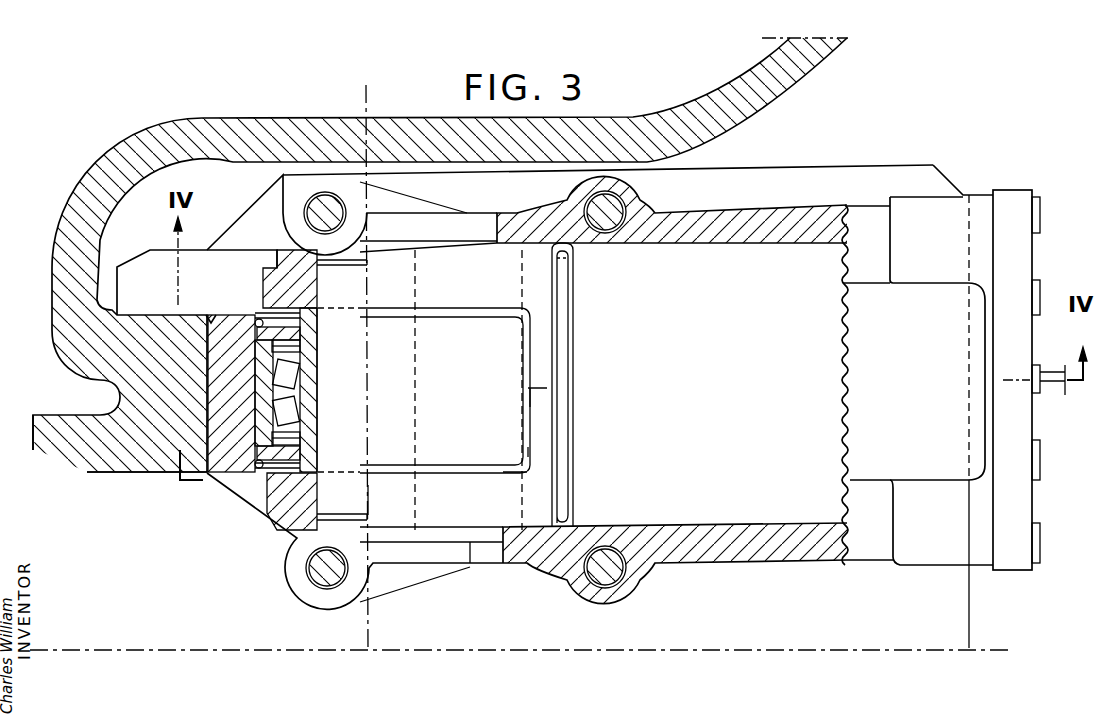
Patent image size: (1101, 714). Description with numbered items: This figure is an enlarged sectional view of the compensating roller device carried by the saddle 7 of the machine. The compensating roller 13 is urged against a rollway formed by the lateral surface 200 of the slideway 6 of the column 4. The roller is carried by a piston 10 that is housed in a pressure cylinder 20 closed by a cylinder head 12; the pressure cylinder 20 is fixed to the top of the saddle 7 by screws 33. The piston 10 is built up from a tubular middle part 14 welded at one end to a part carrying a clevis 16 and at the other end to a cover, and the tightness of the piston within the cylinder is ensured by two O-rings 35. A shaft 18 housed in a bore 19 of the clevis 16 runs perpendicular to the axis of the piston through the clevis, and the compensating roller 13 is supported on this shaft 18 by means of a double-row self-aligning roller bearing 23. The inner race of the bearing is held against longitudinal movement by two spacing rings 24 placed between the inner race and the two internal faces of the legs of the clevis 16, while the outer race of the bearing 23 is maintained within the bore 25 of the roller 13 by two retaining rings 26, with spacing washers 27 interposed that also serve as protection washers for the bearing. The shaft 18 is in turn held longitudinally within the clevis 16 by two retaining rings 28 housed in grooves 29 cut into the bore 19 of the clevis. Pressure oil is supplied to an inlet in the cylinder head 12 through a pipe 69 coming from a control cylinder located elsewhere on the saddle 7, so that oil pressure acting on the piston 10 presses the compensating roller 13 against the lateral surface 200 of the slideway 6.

The column 4 is at (247, 128).
The slideway 6 is at (105, 462).
The saddle 7 is at (760, 637).
The piston 10 is at (735, 500).
The cylinder head 12 is at (1008, 198).
The compensating roller 13 is at (220, 465).
The tubular middle part 14 is at (728, 312).
The clevis 16 is at (445, 270).
The shaft 18 is at (368, 500).
The bore 19 is at (319, 487).
The pressure cylinder 20 is at (810, 247).
The double-row self-aligning roller bearing 23 is at (303, 415).
The spacing rings 24 is at (303, 350).
The bore of the roller 25 is at (303, 387).
The retaining rings 26 is at (262, 318).
The spacing washers 27 is at (303, 328).
The retaining rings 28 is at (318, 264).
The grooves 29 is at (263, 300).
The screws 33 is at (313, 210).
The O-rings 35 is at (565, 380).
The pipe 69 is at (1050, 370).
The lateral surface 200 is at (210, 313).